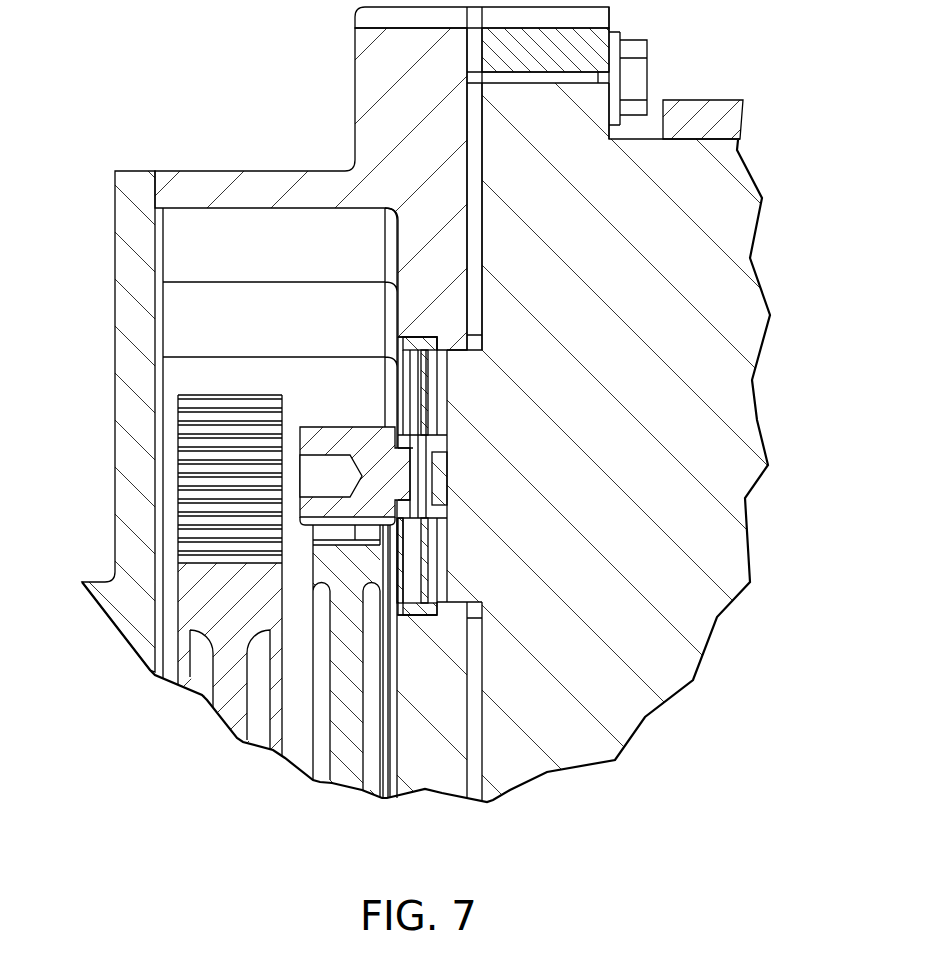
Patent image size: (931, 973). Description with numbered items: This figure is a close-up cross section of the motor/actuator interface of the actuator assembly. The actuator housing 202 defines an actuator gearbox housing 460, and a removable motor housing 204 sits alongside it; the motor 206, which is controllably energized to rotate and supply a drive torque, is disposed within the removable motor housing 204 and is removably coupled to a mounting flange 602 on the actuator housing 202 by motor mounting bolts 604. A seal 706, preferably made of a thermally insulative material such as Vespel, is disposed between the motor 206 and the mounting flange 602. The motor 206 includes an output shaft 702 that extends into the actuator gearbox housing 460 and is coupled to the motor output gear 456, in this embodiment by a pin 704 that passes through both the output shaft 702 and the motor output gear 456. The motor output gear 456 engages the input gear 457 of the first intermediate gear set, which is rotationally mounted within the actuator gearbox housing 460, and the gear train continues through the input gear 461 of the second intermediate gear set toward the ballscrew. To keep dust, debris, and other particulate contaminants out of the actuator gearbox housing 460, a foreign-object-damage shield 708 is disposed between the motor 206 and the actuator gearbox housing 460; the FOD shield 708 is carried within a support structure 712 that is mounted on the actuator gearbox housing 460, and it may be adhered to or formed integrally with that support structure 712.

The actuator housing 202 is at (113, 343).
The removable motor housing 204 is at (730, 100).
The motor 206 is at (754, 418).
The motor output gear 456 is at (350, 433).
The input gear 457 is at (350, 760).
The actuator gearbox housing 460 is at (283, 226).
The input gear 461 is at (243, 403).
The mounting flange 602 is at (352, 88).
The motor mounting bolts 604 is at (646, 62).
The output shaft 702 is at (440, 446).
The pin 704 is at (420, 509).
The seal 706 is at (484, 282).
The FOD shield 708 is at (425, 557).
The support structure 712 is at (423, 617).